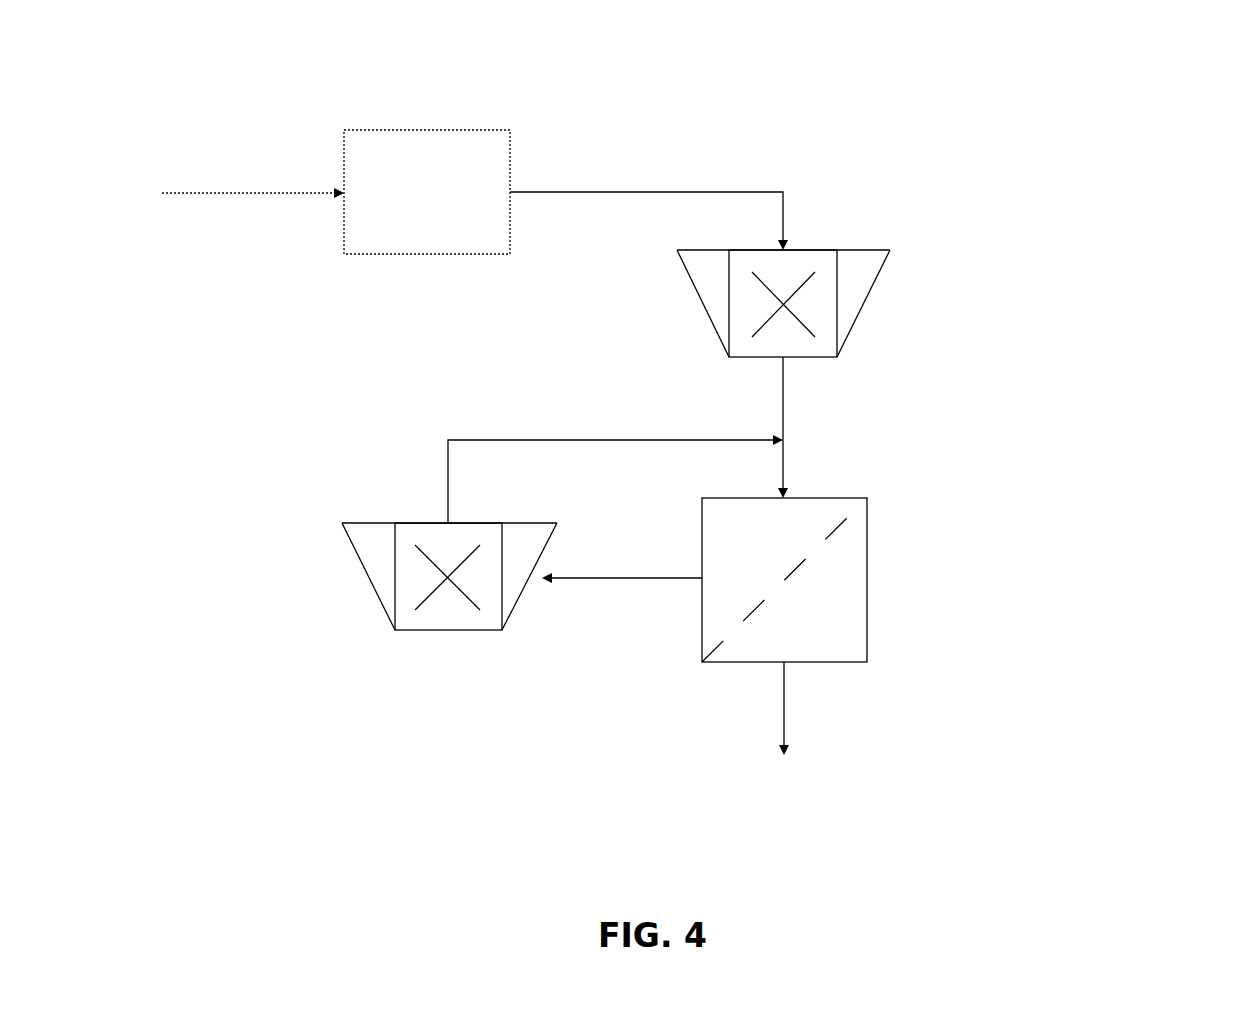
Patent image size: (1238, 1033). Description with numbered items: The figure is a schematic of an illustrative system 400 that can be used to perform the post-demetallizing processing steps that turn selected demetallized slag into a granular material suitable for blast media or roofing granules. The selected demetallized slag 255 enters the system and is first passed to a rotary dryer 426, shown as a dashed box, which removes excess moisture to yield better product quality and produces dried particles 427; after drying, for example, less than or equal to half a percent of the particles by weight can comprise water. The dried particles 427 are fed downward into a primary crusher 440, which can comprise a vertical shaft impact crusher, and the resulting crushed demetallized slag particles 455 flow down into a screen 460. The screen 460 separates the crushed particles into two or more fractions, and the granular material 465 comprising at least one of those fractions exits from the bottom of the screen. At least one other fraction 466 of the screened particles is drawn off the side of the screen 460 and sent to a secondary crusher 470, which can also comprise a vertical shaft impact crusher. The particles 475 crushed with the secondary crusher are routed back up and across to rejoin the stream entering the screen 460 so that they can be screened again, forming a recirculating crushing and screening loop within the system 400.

The system 400 is at (1072, 109).
The selected demetallized slag 255 is at (252, 193).
The rotary dryer 426 is at (427, 130).
The dried particles 427 is at (698, 192).
The primary crusher 440 is at (866, 250).
The crushed demetallized slag particles 455 is at (785, 442).
The screen 460 is at (868, 530).
The granular material 465 is at (785, 710).
The fraction of screened particles 466 is at (618, 580).
The secondary crusher 470 is at (367, 577).
The particles crushed with the secondary crusher 475 is at (448, 467).